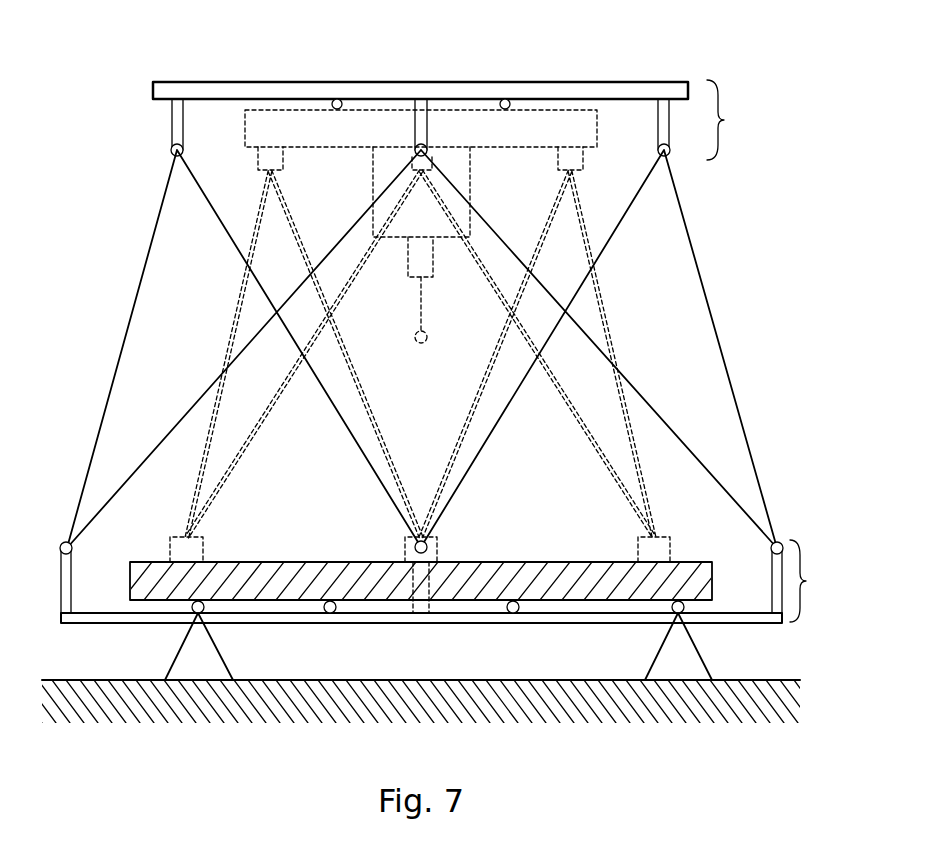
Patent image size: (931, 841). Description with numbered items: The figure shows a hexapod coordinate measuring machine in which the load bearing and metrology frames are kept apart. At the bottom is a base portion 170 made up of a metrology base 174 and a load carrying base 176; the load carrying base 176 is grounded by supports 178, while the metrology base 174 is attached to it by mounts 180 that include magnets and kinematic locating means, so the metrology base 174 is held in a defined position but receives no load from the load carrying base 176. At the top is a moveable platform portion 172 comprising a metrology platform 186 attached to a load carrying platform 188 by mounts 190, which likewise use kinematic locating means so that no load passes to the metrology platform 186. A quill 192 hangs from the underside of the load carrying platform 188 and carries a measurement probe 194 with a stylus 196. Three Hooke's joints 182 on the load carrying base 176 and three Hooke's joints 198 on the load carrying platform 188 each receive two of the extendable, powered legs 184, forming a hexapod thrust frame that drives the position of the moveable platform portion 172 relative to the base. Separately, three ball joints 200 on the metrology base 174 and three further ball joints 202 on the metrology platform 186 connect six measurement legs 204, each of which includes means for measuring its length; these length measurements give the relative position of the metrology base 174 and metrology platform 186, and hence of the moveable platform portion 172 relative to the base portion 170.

The base portion 170 is at (820, 581).
The moveable platform portion 172 is at (739, 120).
The metrology base 174 is at (388, 625).
The load carrying base 176 is at (580, 594).
The supports 178 is at (205, 668).
The mounts 180 is at (328, 614).
The Hooke's joints 182 is at (205, 545).
The powered legs 184 is at (463, 420).
The metrology platform 186 is at (410, 95).
The load carrying platform 188 is at (328, 141).
The mounts 190 is at (334, 99).
The quill 192 is at (470, 183).
The measurement probe 194 is at (434, 257).
The stylus 196 is at (416, 301).
The Hooke's joints 198 is at (284, 160).
The ball joints 200 is at (72, 547).
The ball joints 202 is at (170, 150).
The measurement legs 204 is at (224, 233).